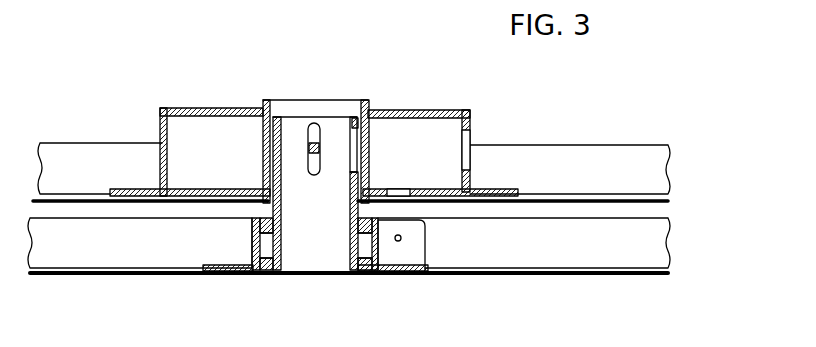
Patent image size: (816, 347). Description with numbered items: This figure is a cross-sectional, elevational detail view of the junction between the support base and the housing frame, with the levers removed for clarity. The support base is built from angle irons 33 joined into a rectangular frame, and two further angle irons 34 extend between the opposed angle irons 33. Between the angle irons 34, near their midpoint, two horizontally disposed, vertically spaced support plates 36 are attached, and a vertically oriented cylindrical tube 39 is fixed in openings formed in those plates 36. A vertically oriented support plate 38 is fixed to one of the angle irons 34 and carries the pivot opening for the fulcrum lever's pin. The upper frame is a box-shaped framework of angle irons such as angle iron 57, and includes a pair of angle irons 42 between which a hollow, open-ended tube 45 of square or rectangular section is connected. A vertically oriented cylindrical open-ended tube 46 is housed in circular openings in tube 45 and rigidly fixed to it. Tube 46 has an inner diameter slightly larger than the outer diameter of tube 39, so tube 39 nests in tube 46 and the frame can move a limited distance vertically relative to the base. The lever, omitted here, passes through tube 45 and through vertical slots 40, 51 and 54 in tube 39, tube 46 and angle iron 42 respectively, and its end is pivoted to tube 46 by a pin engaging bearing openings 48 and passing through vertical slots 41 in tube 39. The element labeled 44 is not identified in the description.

The angle irons 33 is at (102, 255).
The angle irons 34 is at (233, 273).
The support plates 36 is at (350, 261).
The support plate 38 is at (410, 245).
The cylindrical tube 39 is at (305, 245).
The vertical slot 40 is at (347, 137).
The vertical slots 41 is at (318, 132).
The angle irons 42 is at (160, 125).
The bottom plate 44 is at (402, 189).
The hollow open-ended tube 45 is at (420, 114).
The cylindrical open-ended tube 46 is at (263, 103).
The bearing openings 48 is at (306, 143).
The vertical slot 51 is at (373, 135).
The vertical slot 54 is at (472, 138).
The angle iron 57 is at (78, 162).